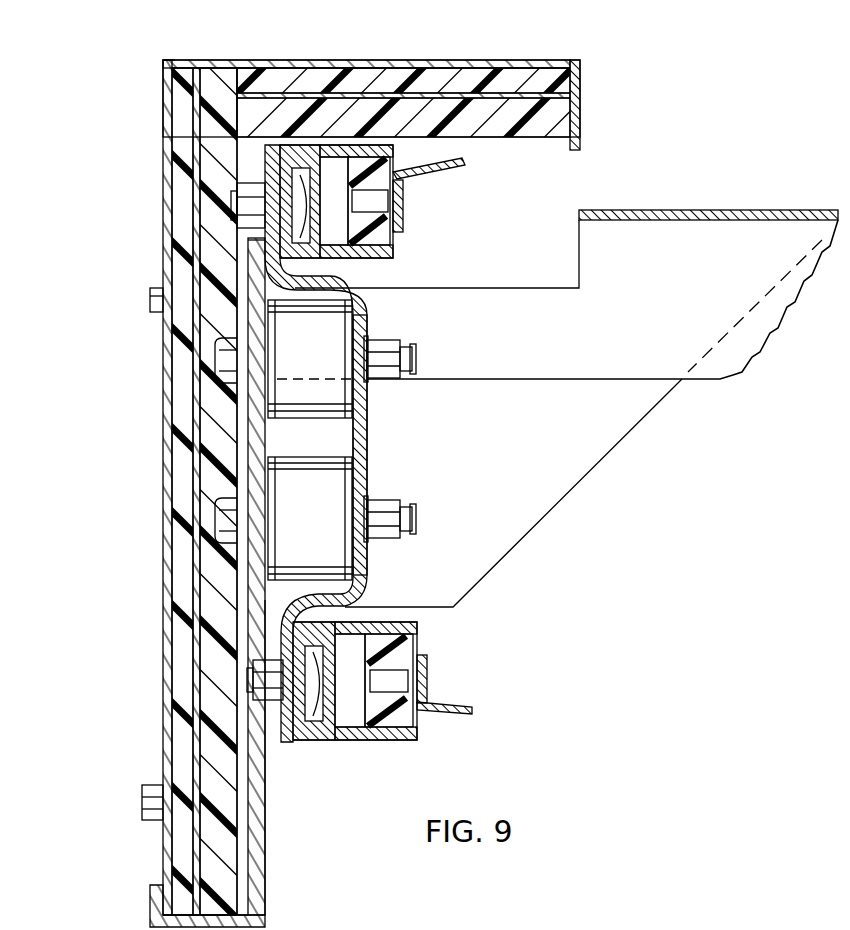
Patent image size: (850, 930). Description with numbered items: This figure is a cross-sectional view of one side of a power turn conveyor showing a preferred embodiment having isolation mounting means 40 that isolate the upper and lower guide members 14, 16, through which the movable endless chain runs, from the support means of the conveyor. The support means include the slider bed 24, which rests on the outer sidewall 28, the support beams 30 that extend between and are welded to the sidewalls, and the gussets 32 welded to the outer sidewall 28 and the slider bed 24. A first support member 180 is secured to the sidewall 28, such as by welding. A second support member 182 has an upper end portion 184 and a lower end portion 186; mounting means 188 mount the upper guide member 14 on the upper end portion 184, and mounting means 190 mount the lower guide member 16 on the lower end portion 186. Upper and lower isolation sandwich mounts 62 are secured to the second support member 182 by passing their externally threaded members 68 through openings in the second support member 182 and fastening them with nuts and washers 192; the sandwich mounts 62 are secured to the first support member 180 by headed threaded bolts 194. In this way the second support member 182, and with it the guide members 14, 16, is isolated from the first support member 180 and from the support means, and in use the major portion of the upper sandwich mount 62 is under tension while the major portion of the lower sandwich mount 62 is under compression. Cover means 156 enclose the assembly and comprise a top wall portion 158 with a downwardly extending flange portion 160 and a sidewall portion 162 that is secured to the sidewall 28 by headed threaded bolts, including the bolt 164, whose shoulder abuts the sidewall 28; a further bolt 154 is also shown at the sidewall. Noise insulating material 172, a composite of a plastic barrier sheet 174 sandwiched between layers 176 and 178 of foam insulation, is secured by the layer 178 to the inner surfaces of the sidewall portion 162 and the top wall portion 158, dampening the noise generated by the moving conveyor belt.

The upper guide member 14 is at (378, 260).
The lower guide member 16 is at (370, 738).
The slider bed 24 is at (660, 216).
The outer sidewall 28 is at (258, 838).
The support beams 30 is at (765, 316).
The gussets 32 is at (512, 541).
The isolation mounting means 40 is at (398, 413).
The isolation sandwich mounts 62 is at (367, 312).
The externally threaded members 68 is at (417, 358).
The fastener 154 is at (160, 300).
The cover means 156 is at (615, 113).
The top wall portion 158 is at (176, 62).
The flange portion 160 is at (573, 127).
The sidewall portion 162 is at (165, 93).
The headed threaded bolt 164 is at (152, 820).
The noise insulating material 172 is at (266, 821).
The plastic barrier sheet 174 is at (197, 638).
The layer of foam insulation 176 is at (215, 668).
The layer of foam insulation 178 is at (185, 598).
The first support member 180 is at (265, 437).
The second support member 182 is at (363, 433).
The upper end portion 184 is at (270, 162).
The lower end portion 186 is at (300, 742).
The mounting means 188 is at (250, 213).
The mounting means 190 is at (272, 722).
The nuts and washers 192 is at (382, 343).
The headed threaded bolts 194 is at (225, 358).